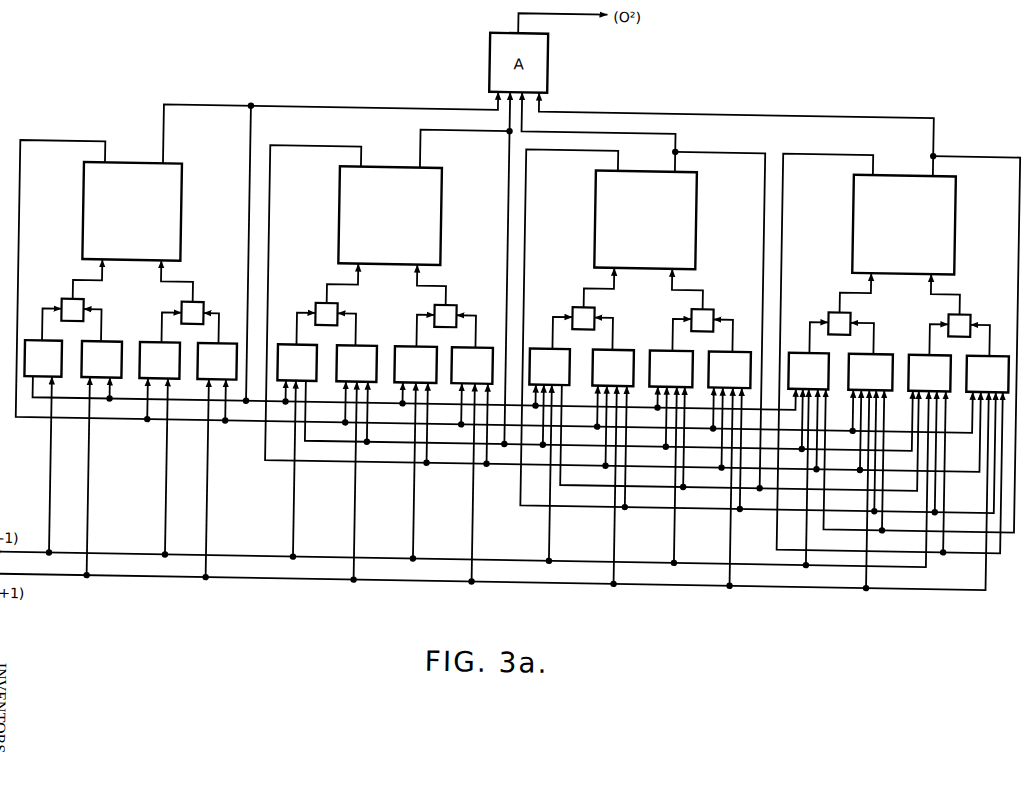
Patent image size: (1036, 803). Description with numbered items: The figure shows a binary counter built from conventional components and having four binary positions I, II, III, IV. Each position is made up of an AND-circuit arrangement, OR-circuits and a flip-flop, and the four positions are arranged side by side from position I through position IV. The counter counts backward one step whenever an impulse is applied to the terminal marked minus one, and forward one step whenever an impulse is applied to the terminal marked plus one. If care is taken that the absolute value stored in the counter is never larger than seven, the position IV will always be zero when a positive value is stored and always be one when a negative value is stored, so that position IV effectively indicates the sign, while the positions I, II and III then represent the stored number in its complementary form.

The binary position I is at (495, 338).
The binary position II is at (624, 340).
The binary position III is at (757, 342).
The binary position IV is at (776, 343).